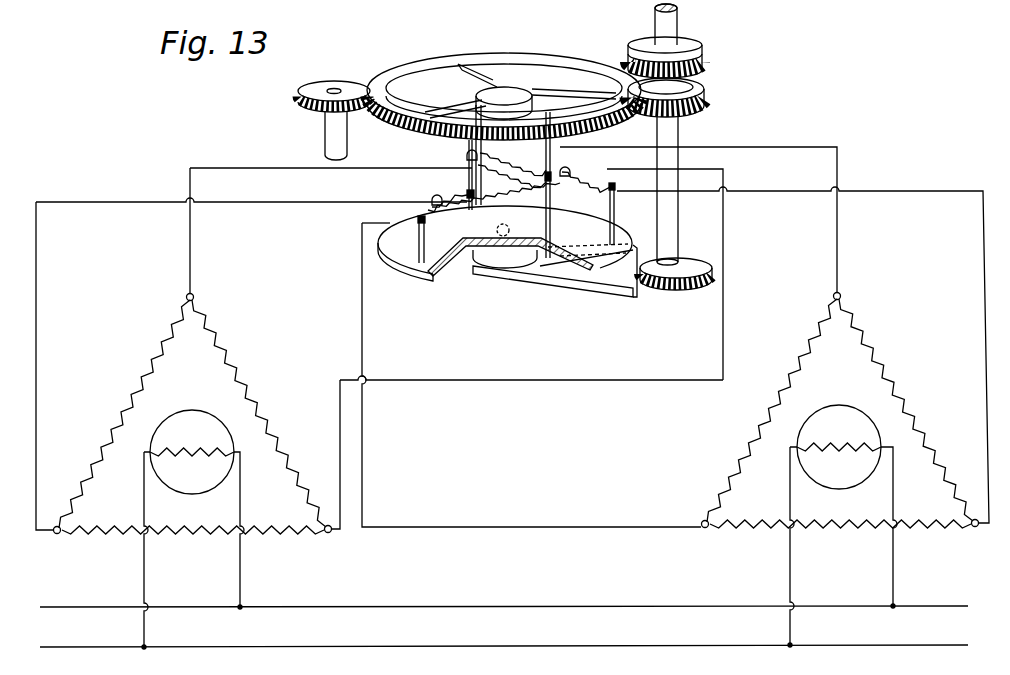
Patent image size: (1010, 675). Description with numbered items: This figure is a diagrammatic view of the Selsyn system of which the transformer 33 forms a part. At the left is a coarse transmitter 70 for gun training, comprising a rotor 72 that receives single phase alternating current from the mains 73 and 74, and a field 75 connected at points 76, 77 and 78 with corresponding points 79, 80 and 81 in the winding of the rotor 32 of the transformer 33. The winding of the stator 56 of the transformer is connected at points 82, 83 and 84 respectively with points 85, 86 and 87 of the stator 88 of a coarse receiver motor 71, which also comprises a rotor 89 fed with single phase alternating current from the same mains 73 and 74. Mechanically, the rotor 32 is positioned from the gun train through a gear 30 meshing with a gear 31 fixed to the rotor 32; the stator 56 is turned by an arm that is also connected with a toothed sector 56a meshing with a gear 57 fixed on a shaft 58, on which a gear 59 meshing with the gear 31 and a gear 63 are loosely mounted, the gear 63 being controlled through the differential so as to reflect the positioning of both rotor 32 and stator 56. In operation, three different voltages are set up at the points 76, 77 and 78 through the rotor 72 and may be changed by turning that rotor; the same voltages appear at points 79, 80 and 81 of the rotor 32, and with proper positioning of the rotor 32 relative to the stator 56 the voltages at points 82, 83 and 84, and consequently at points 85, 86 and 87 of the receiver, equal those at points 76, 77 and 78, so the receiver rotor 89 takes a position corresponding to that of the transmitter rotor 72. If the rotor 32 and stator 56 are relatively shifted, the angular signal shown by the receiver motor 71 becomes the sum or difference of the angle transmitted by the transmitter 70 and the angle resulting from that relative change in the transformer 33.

The gear 30 is at (300, 97).
The gear 31 is at (552, 54).
The rotor 32 is at (496, 206).
The Selsyn transformer 33 is at (467, 282).
The stator 56 is at (508, 210).
The toothed sector 56a is at (608, 288).
The gear 57 is at (684, 277).
The shaft 58 is at (672, 128).
The gear 59 is at (706, 93).
The gear 63 is at (700, 48).
The coarse transmitter 70 is at (124, 381).
The coarse receiver motor 71 is at (901, 375).
The rotor 72 is at (200, 410).
The main 73 is at (302, 647).
The main 74 is at (372, 607).
The field 75 is at (250, 388).
The point 76 is at (194, 294).
The point 77 is at (60, 534).
The point 78 is at (330, 533).
The point 79 is at (550, 160).
The point 80 is at (466, 194).
The point 81 is at (549, 186).
The point 82 is at (466, 153).
The point 83 is at (420, 222).
The point 84 is at (615, 188).
The point 85 is at (841, 295).
The point 86 is at (703, 521).
The point 87 is at (973, 527).
The stator 88 is at (753, 441).
The rotor 89 is at (840, 405).